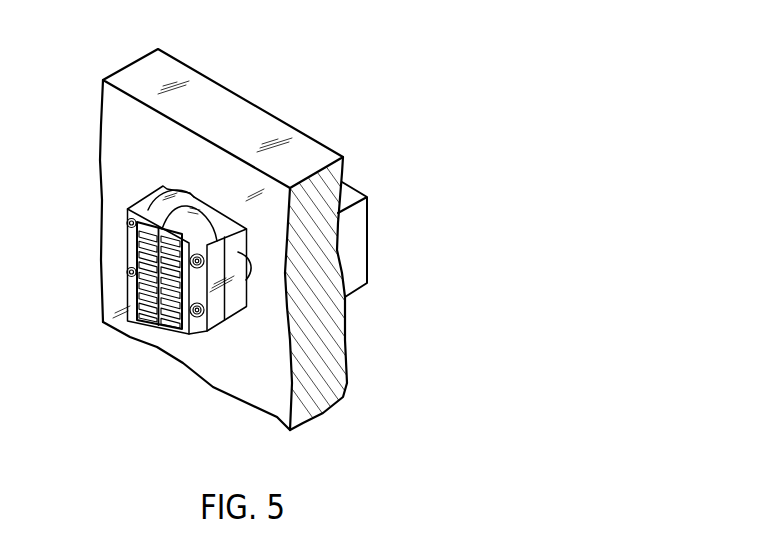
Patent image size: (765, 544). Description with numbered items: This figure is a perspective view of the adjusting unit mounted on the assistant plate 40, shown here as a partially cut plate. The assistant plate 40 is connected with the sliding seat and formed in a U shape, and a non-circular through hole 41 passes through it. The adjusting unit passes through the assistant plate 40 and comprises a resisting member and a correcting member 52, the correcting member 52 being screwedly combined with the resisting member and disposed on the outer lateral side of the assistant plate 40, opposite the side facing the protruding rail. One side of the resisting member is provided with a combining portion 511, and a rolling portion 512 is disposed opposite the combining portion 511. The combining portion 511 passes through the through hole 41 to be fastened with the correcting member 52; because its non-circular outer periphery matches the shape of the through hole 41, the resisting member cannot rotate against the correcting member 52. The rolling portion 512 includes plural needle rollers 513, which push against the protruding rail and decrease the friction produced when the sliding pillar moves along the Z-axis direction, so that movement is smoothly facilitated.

The assistant plate 40 is at (281, 103).
The through hole 41 is at (252, 277).
The correcting member 52 is at (360, 240).
The combining portion 511 is at (222, 214).
The rolling portion 512 is at (148, 209).
The needle rollers 513 is at (145, 302).